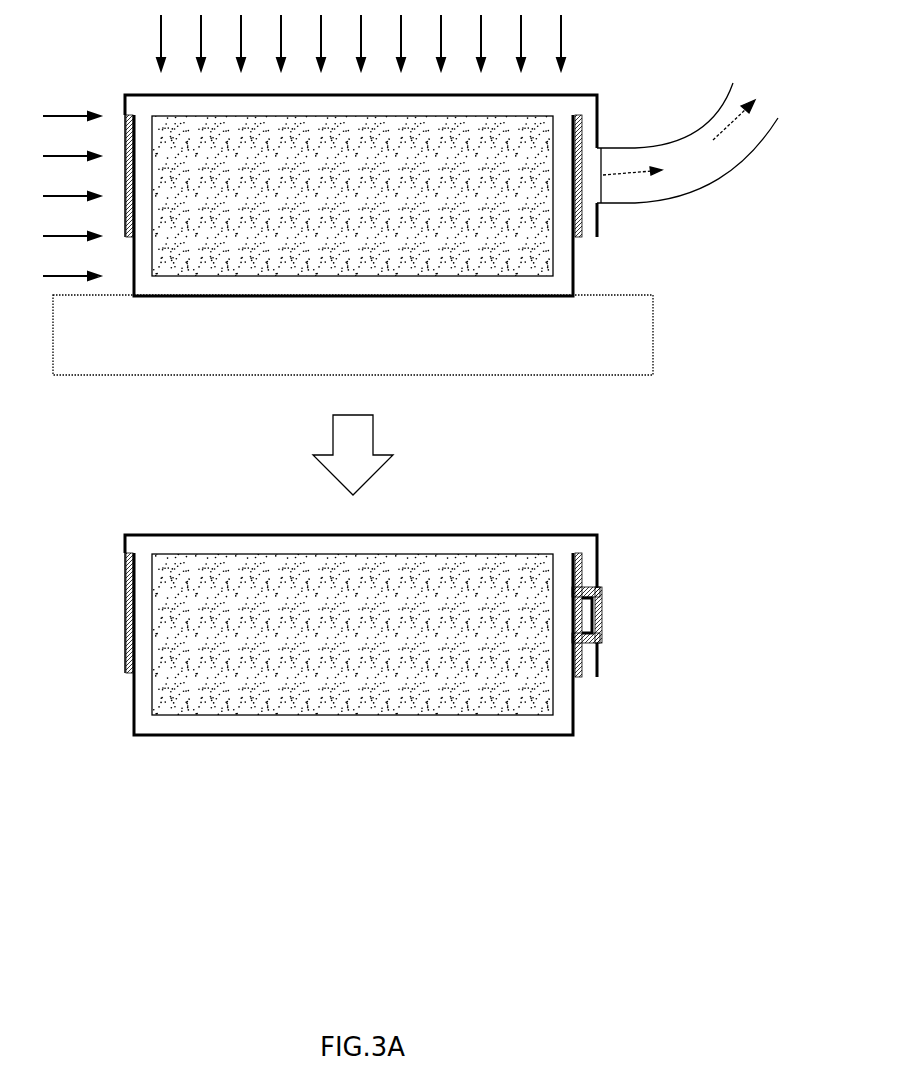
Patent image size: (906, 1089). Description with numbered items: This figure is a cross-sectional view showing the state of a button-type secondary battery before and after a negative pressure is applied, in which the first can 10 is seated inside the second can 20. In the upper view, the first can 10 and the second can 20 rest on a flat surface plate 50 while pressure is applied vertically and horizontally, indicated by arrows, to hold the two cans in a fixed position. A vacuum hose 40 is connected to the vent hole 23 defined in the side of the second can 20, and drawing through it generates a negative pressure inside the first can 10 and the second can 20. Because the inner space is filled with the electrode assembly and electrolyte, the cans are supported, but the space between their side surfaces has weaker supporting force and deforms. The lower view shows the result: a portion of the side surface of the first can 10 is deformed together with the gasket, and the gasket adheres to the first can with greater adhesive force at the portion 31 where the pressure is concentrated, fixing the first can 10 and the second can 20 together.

The first can 10 is at (211, 298).
The second can 20 is at (577, 95).
The vent hole 23 is at (600, 150).
The portion of the gasket 31 is at (603, 612).
The vacuum hose 40 is at (720, 170).
The flat surface plate 50 is at (653, 335).